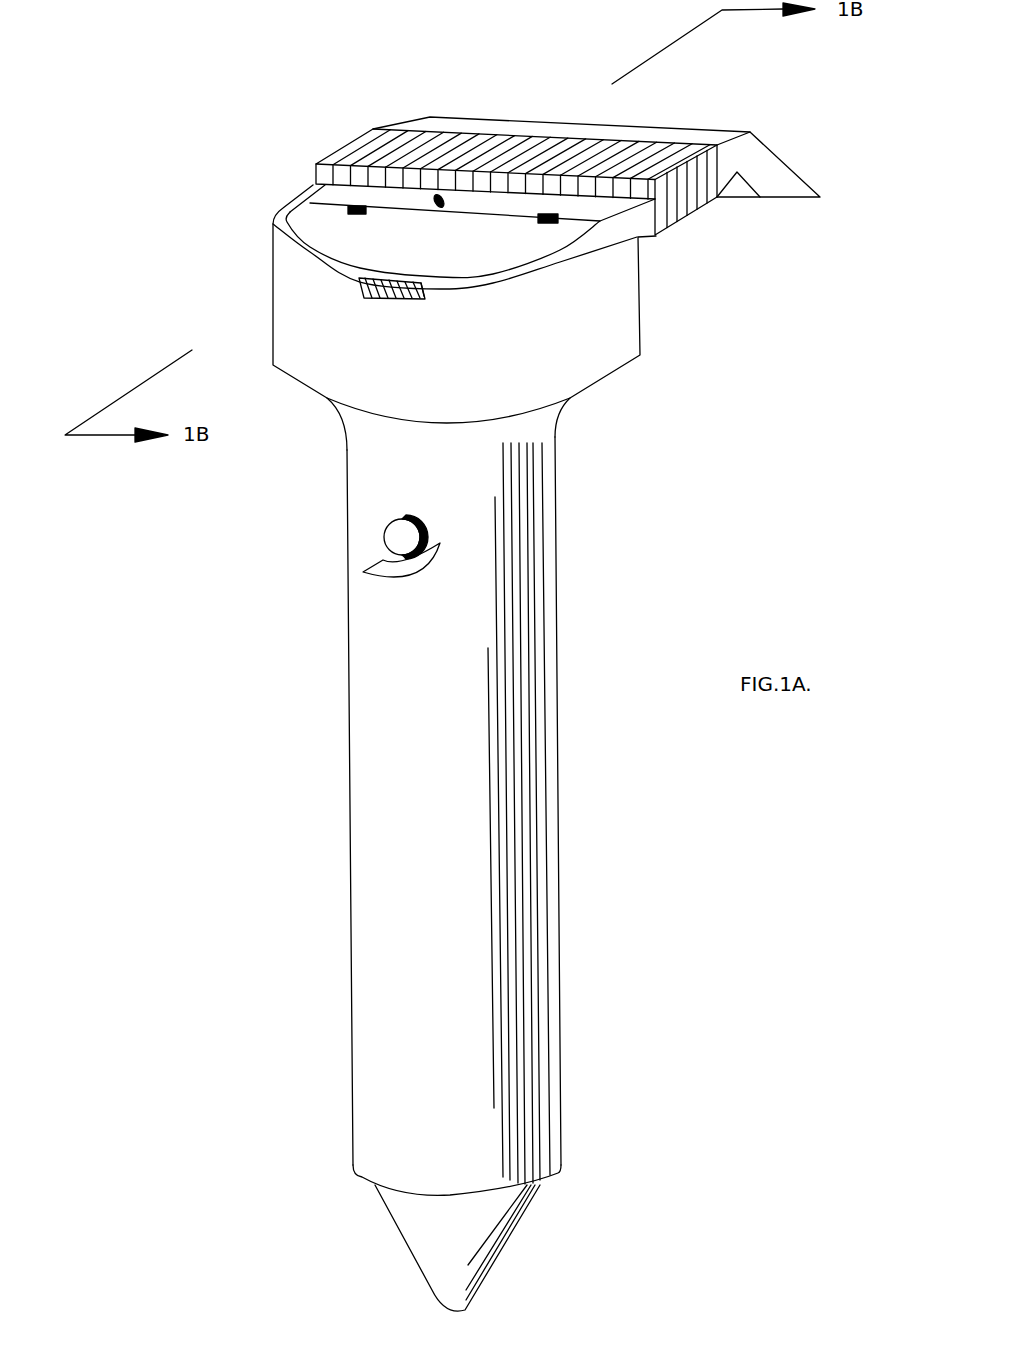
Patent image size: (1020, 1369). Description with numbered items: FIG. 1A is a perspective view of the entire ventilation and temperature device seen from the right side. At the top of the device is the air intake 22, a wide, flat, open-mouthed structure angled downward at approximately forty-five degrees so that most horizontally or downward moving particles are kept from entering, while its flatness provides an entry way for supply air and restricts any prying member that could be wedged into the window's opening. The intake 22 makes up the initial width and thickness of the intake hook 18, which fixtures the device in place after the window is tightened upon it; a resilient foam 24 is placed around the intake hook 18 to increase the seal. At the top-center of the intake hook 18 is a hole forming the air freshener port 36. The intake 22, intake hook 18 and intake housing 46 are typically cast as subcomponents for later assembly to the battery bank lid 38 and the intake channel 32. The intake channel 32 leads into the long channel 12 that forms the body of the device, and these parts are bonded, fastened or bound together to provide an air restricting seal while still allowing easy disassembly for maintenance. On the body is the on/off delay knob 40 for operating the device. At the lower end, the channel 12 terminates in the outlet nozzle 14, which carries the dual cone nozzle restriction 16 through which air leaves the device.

The channel 12 is at (557, 572).
The outlet nozzle 14 is at (560, 1168).
The dual cone nozzle restriction 16 is at (512, 1245).
The intake hook 18 is at (733, 188).
The air intake 22 is at (790, 163).
The resilient foam 24 is at (353, 133).
The intake channel 32 is at (555, 433).
The air freshener port 36 is at (427, 200).
The battery bank lid 38 is at (317, 233).
The on/off delay knob 40 is at (383, 525).
The intake housing 46 is at (270, 323).